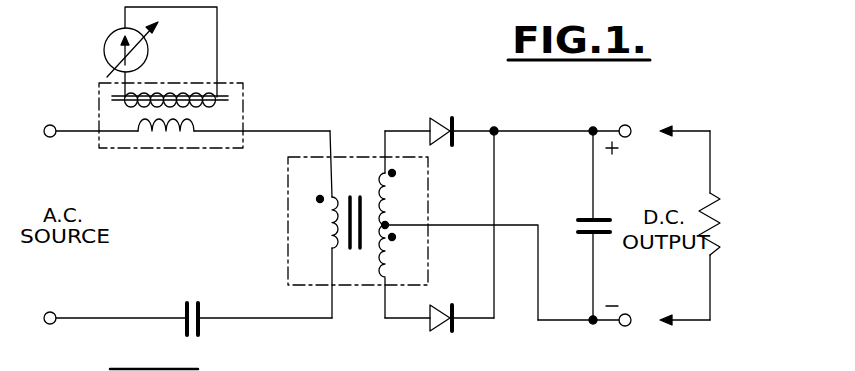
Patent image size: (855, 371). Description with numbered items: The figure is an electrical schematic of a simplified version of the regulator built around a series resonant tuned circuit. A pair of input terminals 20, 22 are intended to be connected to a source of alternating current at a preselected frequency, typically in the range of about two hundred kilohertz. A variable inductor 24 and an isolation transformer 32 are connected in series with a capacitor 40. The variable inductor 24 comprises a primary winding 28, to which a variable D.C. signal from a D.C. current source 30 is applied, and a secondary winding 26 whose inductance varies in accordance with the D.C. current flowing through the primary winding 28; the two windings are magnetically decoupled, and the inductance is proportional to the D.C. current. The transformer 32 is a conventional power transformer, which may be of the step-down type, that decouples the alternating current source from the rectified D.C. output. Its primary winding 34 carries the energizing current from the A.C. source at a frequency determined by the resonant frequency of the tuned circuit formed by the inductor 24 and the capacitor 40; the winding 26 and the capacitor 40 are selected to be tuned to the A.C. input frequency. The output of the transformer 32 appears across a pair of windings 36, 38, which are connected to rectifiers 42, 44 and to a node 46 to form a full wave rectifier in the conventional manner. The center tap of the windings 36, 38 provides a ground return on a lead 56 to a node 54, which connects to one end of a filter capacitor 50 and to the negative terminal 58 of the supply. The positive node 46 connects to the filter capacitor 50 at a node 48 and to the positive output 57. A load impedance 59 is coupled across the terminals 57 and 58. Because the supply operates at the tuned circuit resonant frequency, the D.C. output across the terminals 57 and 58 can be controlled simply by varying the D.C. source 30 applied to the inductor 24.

The input terminal 20 is at (49, 124).
The input terminal 22 is at (50, 312).
The variable inductor 24 is at (243, 120).
The secondary winding 26 is at (168, 134).
The primary winding 28 is at (217, 50).
The D.C. current source 30 is at (104, 46).
The isolation transformer 32 is at (286, 176).
The primary winding 34 is at (332, 229).
The winding 36 is at (375, 185).
The winding 38 is at (375, 262).
The capacitor 40 is at (184, 300).
The rectifier 42 is at (436, 118).
The rectifier 44 is at (440, 308).
The node 46 is at (494, 128).
The node 48 is at (593, 128).
The filter capacitor 50 is at (582, 218).
The node 54 is at (592, 318).
The lead 56 is at (540, 235).
The positive output 57 is at (628, 124).
The negative terminal 58 is at (632, 316).
The load impedance 59 is at (700, 200).